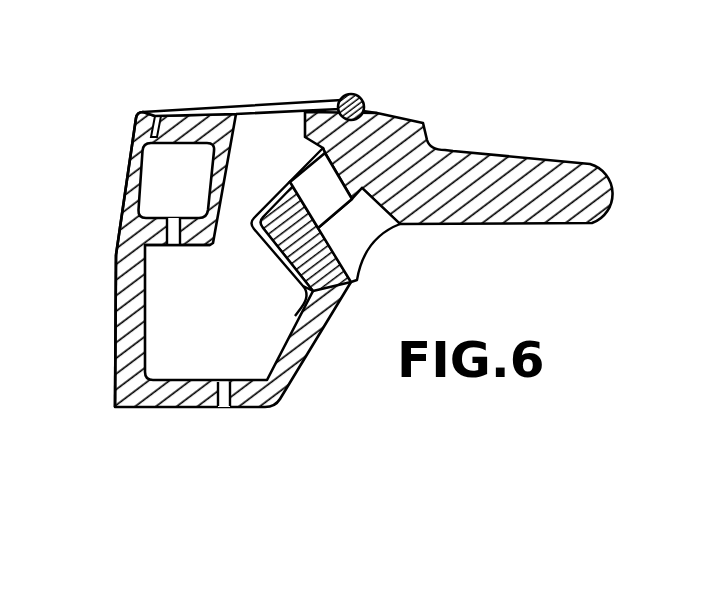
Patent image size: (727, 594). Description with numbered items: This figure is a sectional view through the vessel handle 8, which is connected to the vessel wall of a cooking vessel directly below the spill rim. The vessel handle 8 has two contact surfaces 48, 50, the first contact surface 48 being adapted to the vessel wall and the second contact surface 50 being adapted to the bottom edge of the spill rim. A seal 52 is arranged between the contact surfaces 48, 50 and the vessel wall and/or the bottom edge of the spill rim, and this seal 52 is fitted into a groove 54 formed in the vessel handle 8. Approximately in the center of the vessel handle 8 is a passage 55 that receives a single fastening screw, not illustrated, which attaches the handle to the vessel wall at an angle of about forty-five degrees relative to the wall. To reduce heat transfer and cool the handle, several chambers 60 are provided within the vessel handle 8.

The vessel handle 8 is at (522, 134).
The contact surface 48 is at (130, 174).
The contact surface 50 is at (247, 101).
The seal 52 is at (350, 92).
The groove 54 is at (365, 102).
The passage 55 is at (302, 193).
The chambers 60 is at (157, 195).